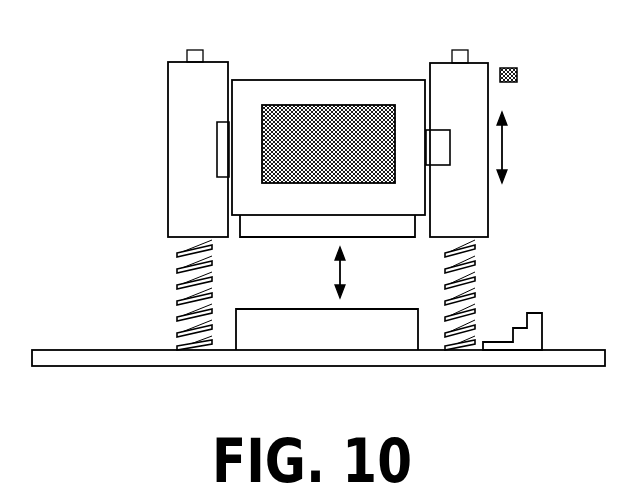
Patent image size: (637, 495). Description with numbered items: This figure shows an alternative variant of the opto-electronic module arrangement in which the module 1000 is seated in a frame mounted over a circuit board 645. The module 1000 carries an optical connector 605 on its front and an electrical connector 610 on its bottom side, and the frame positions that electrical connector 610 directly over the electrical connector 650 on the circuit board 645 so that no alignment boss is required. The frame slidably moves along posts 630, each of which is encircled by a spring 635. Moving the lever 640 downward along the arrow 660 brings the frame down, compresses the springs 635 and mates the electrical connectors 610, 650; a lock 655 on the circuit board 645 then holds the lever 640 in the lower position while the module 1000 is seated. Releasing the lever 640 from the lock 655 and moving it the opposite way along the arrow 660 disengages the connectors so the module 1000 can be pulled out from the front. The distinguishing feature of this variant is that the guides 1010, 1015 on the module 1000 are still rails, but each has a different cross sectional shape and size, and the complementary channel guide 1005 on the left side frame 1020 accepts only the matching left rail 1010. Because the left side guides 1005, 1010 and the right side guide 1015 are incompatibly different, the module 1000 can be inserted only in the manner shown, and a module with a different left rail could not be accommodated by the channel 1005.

The module 1000 is at (312, 97).
The optical connector 605 is at (343, 110).
The electrical connector 610 is at (285, 238).
The post 630 is at (460, 50).
The spring 635 is at (180, 277).
The lever 640 is at (512, 68).
The circuit board 645 is at (101, 356).
The electrical connector 650 is at (285, 310).
The lock 655 is at (545, 328).
The arrow 660 is at (504, 148).
The guide 1005 is at (219, 123).
The guide 1010 is at (221, 177).
The guide 1015 is at (436, 150).
The left side frame 1020 is at (168, 62).